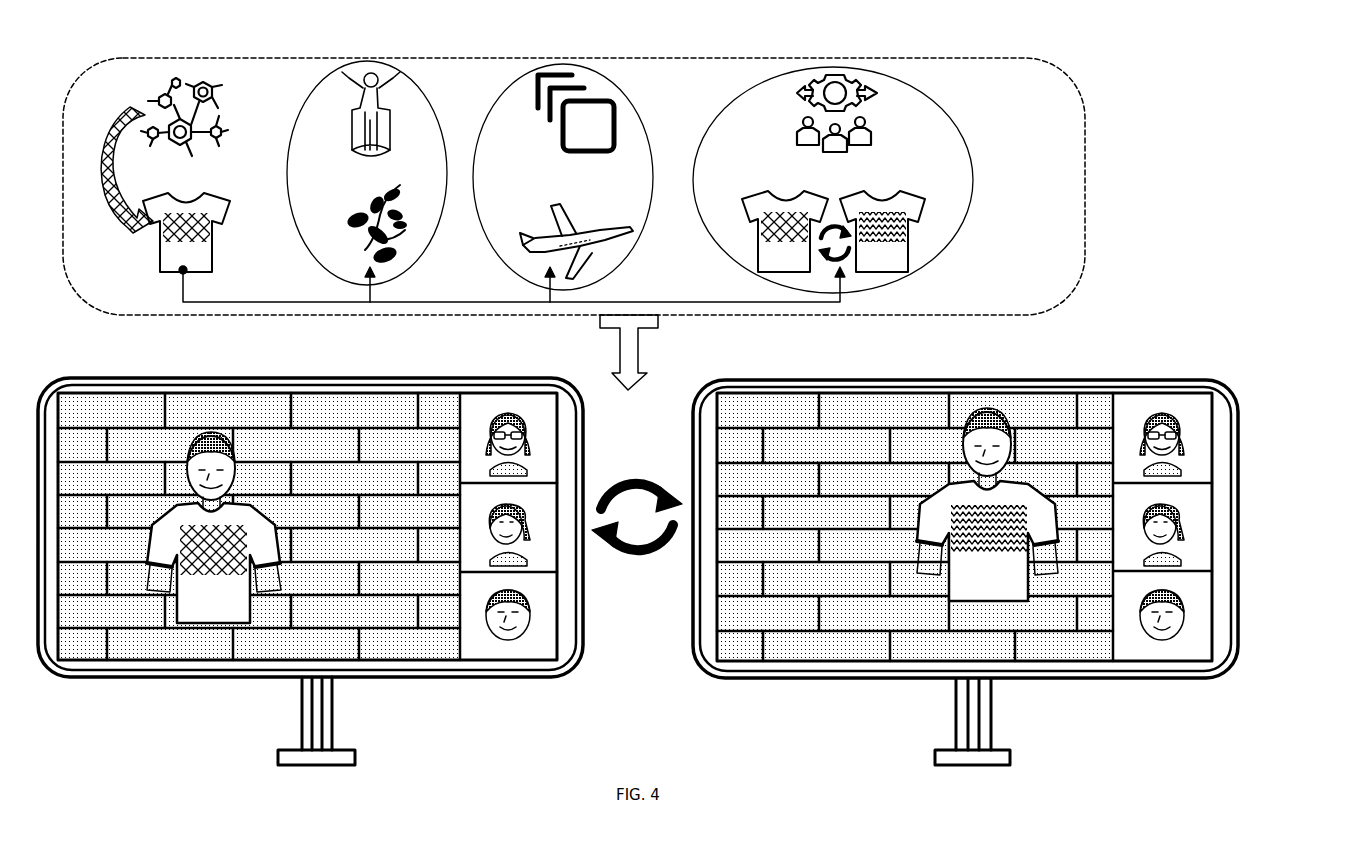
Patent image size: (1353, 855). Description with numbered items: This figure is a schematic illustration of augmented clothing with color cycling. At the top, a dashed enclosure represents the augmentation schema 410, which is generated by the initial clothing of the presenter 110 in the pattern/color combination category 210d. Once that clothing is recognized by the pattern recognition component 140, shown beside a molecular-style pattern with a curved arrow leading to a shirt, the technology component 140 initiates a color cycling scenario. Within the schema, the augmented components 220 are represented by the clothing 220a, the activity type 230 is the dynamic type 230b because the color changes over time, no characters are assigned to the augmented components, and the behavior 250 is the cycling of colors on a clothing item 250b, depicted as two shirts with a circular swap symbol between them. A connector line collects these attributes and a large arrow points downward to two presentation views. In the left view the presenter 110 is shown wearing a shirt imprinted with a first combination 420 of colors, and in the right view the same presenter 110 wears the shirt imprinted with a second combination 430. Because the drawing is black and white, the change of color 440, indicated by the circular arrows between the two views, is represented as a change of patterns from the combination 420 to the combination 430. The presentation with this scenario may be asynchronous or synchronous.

The augmentation schema 410 is at (1087, 162).
The pattern recognition component 140 is at (150, 100).
The recognizable pattern/color combinations 210d is at (163, 236).
The augmented components 220 is at (363, 103).
The clothing 220a is at (372, 257).
The predominant activity type 230 is at (533, 92).
The dynamic activity type 230b is at (540, 253).
The behaviors 250 is at (807, 83).
The cycling colors on a clothing item 250b is at (845, 258).
The first color combination 420 is at (222, 577).
The presenter 110 is at (243, 473).
The change of color 440 is at (615, 558).
The second color combination 430 is at (987, 552).